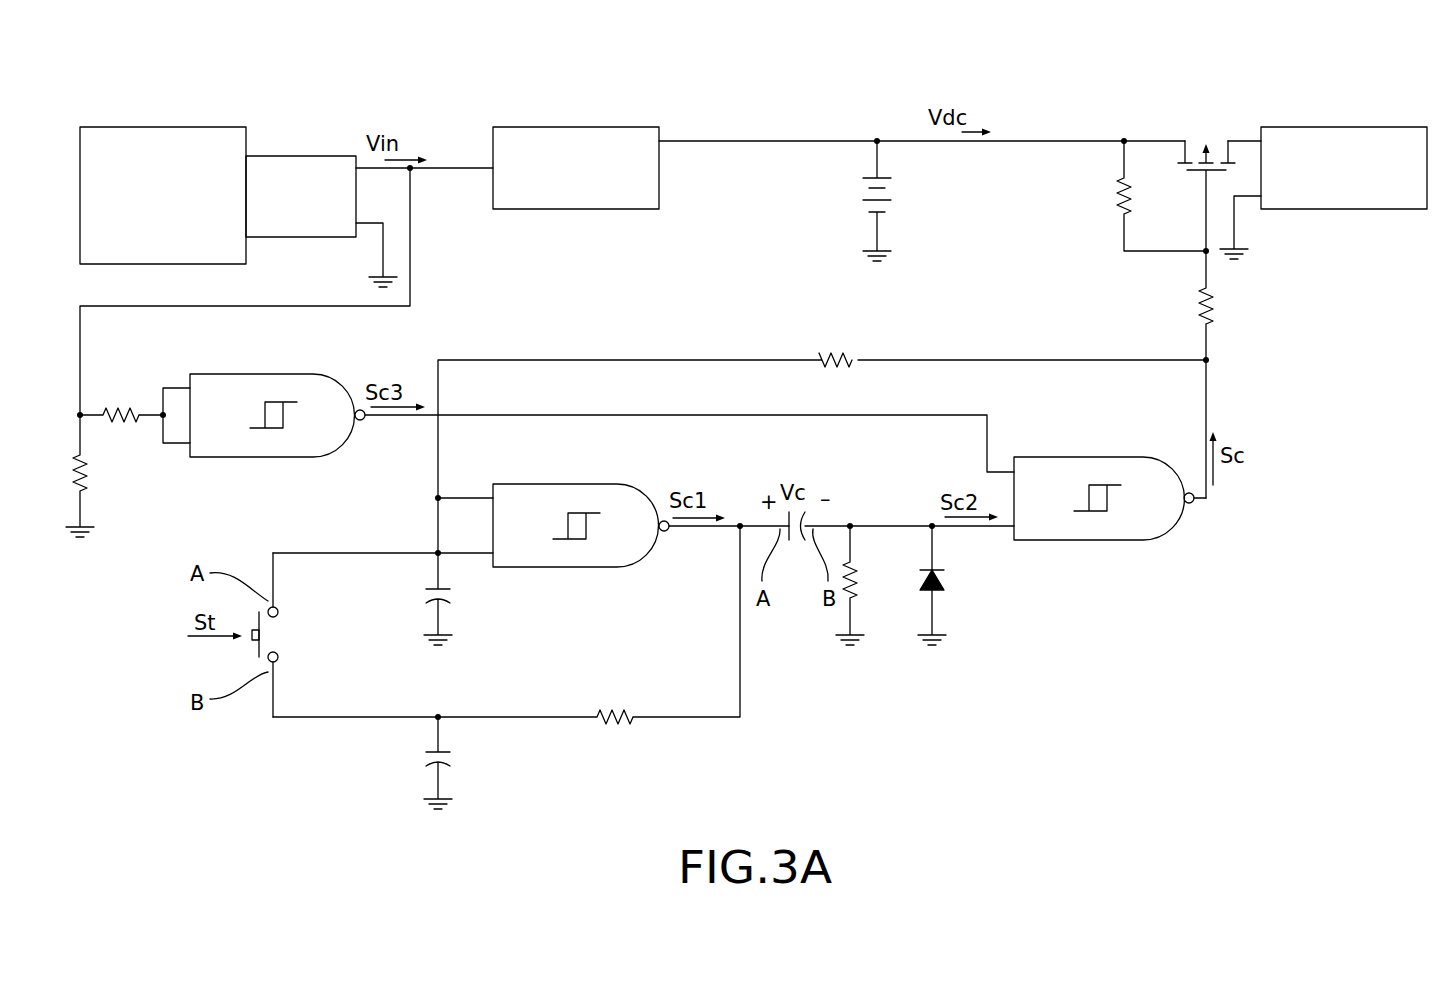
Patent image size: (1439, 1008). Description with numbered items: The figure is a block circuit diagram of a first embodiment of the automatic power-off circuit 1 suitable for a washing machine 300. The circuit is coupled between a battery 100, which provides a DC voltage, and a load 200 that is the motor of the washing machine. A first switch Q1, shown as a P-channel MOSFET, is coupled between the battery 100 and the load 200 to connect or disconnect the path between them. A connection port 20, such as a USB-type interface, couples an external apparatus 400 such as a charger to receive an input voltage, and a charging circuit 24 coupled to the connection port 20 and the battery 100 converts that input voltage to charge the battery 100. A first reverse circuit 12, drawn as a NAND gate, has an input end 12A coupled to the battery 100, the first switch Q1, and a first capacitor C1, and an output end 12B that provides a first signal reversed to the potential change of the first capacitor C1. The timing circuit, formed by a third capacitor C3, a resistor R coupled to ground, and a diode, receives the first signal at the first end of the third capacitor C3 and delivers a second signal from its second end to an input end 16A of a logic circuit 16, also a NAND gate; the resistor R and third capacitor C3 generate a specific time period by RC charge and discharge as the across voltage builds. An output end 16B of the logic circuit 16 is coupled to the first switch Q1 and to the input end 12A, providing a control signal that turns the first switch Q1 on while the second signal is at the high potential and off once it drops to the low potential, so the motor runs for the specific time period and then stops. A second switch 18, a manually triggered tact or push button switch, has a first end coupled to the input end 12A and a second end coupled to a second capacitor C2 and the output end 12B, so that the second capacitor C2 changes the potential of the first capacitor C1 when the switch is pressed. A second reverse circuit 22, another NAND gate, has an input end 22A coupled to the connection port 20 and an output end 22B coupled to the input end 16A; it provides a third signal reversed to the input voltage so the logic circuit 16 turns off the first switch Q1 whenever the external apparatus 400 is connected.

The washing machine 300 is at (773, 70).
The external apparatus 400 is at (163, 132).
The connection port 20 is at (300, 157).
The charging circuit 24 is at (577, 133).
The battery 100 is at (860, 190).
The load 200 is at (1345, 133).
The first switch Q1 is at (1176, 304).
The second reverse circuit 22 is at (253, 383).
The input end of second reverse circuit 22A is at (178, 383).
The output end of second reverse circuit 22B is at (373, 420).
The first reverse circuit 12 is at (556, 491).
The input end of first reverse circuit 12A is at (482, 562).
The output end of first reverse circuit 12B is at (676, 531).
The logic circuit 16 is at (1078, 466).
The input end of logic circuit 16A is at (1003, 465).
The output end of logic circuit 16B is at (1196, 505).
The second switch 18 is at (278, 638).
The first capacitor C1 is at (420, 599).
The second capacitor C2 is at (420, 761).
The third capacitor C3 is at (856, 540).
The resistor R is at (856, 584).
The automatic power-off circuit 1 is at (912, 704).